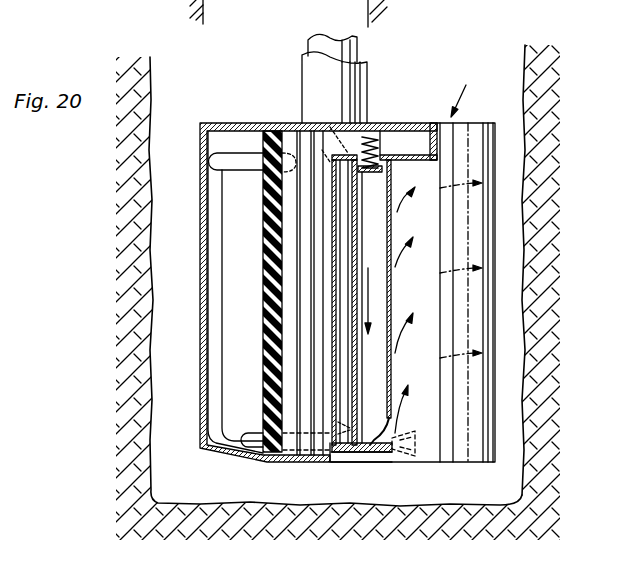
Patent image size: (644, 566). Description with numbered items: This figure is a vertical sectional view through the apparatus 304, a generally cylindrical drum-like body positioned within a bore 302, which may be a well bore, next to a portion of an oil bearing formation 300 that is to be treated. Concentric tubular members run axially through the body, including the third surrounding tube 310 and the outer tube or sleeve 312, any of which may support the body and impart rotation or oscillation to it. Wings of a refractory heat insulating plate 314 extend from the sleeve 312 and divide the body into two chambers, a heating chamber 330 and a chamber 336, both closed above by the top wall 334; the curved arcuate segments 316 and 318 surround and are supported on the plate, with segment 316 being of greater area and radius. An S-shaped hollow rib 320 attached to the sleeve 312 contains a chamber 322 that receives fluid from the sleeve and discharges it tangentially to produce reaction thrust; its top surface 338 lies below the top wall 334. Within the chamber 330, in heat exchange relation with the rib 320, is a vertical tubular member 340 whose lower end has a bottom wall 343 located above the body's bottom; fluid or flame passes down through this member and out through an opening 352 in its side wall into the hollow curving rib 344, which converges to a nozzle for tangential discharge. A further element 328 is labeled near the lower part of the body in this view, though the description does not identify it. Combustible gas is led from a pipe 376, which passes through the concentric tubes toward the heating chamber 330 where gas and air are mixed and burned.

The formation 300 is at (140, 97).
The bore 302 is at (535, 100).
The apparatus 304 is at (471, 91).
The third surrounding tube 310 is at (327, 43).
The outer tube or sleeve 312 is at (357, 83).
The heat insulating plate 314 is at (267, 247).
The arcuate segment 316 is at (470, 322).
The arcuate segment 318 is at (204, 347).
The S-shaped hollow rib 320 is at (334, 283).
The chamber 322 is at (343, 318).
The lower chamber 328 is at (347, 458).
The semi-cylindrical chamber 330 is at (415, 140).
The top wall 334 is at (387, 123).
The chamber 336 is at (232, 188).
The top surface of the rib 338 is at (410, 160).
The vertical tubular member 340 is at (407, 293).
The bottom wall 343 is at (362, 452).
The curving rib 344 is at (414, 241).
The opening 352 is at (387, 450).
The pipe 376 is at (384, 406).